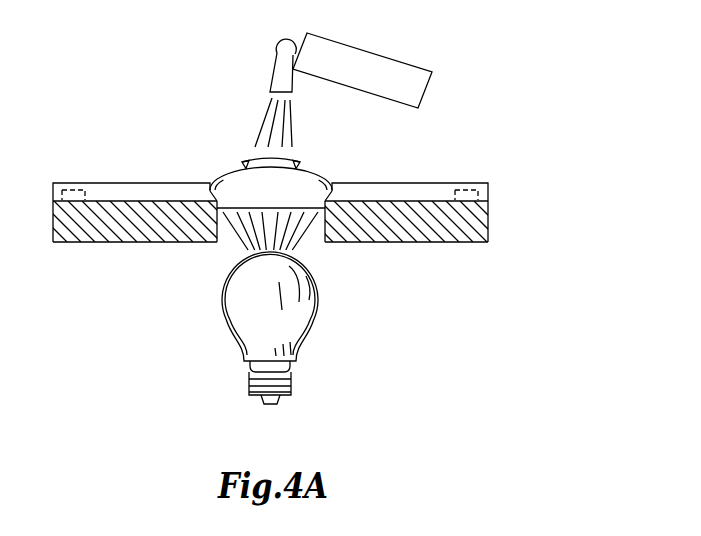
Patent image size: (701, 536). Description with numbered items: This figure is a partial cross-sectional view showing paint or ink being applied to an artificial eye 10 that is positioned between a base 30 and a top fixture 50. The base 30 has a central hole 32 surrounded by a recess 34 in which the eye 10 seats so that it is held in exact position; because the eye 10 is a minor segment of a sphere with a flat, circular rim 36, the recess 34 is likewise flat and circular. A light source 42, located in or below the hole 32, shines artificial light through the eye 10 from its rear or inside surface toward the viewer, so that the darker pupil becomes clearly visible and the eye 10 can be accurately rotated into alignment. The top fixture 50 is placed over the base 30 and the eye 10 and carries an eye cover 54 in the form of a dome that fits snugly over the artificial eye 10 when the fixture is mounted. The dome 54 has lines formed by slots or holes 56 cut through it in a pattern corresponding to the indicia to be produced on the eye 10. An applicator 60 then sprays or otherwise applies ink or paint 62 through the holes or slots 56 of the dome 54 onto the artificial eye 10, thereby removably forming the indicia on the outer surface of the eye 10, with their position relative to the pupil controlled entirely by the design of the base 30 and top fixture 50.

The eye 10 is at (312, 193).
The base 30 is at (478, 215).
The central hole 32 is at (250, 218).
The recess 34 is at (337, 243).
The rim 36 is at (212, 205).
The light source 42 is at (290, 312).
The top fixture 50 is at (403, 190).
The eye cover 54 is at (237, 186).
The slots or holes 56 is at (240, 164).
The applicator 60 is at (390, 71).
The paint 62 is at (292, 128).